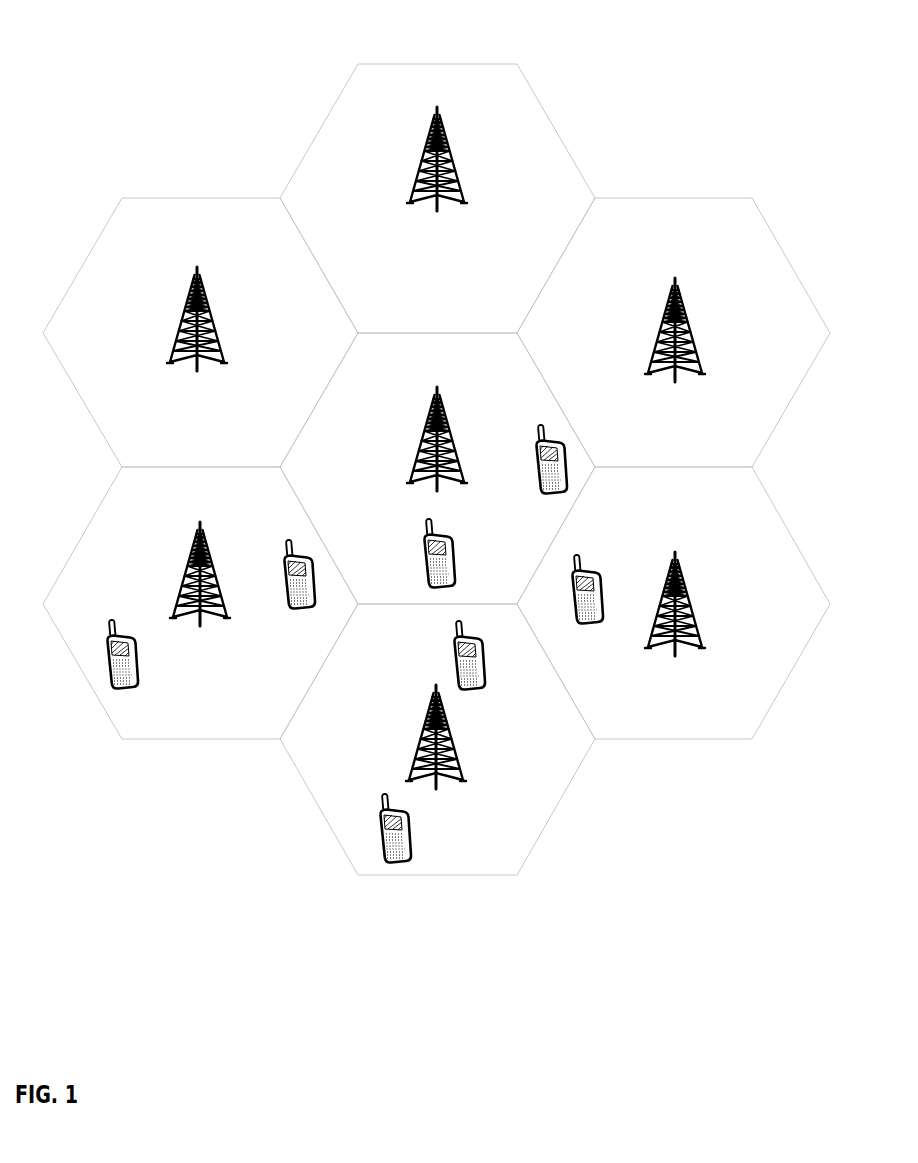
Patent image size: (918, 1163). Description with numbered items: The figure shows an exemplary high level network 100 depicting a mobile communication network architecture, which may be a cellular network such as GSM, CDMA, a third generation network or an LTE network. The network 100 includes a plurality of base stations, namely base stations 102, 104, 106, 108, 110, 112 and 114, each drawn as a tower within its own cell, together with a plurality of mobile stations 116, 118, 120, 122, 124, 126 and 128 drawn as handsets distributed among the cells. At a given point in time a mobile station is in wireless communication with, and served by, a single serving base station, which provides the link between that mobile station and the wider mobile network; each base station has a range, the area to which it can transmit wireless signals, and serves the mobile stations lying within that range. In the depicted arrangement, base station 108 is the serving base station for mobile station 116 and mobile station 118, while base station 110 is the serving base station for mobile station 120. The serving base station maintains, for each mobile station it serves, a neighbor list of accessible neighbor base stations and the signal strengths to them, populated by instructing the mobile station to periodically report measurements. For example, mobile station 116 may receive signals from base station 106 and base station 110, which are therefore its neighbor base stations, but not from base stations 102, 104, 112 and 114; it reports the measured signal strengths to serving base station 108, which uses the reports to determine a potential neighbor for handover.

The network 100 is at (318, 28).
The base station 102 is at (207, 316).
The base station 104 is at (448, 158).
The base station 106 is at (668, 333).
The base station 108 is at (428, 442).
The base station 110 is at (694, 612).
The base station 112 is at (458, 757).
The base station 114 is at (205, 552).
The mobile station 116 is at (535, 453).
The mobile station 118 is at (455, 548).
The mobile station 120 is at (608, 568).
The mobile station 122 is at (453, 658).
The mobile station 124 is at (380, 813).
The mobile station 126 is at (297, 612).
The mobile station 128 is at (107, 627).